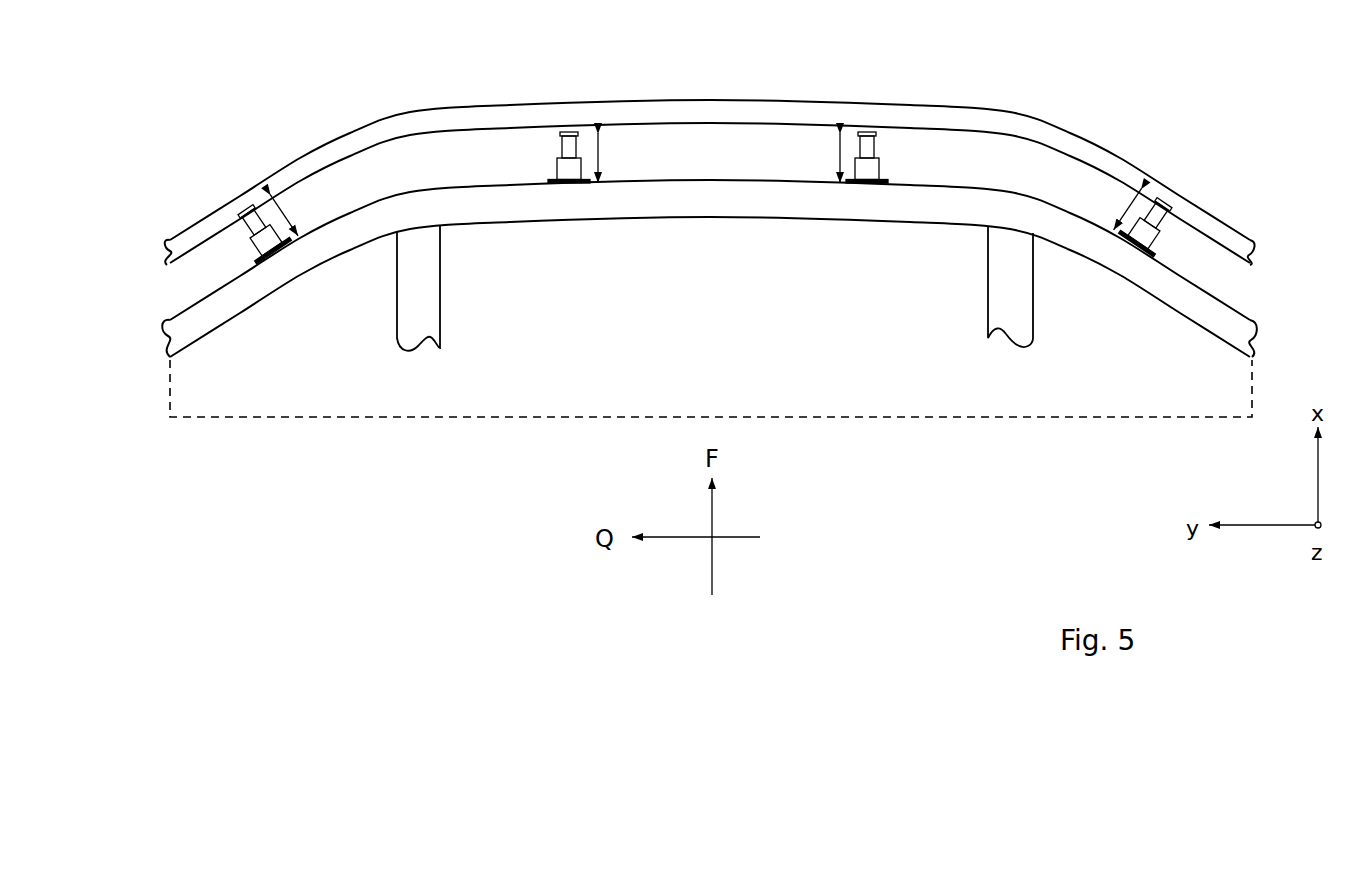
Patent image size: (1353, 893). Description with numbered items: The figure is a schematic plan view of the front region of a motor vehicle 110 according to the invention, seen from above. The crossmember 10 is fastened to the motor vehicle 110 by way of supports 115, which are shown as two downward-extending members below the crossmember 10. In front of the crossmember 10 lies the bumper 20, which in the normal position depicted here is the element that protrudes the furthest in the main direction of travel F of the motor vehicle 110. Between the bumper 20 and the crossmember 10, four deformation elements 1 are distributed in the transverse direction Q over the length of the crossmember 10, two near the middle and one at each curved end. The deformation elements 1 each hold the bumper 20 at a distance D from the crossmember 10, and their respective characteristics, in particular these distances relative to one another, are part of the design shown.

The deformation element 1 is at (557, 152).
The crossmember 10 is at (230, 300).
The bumper 20 is at (688, 117).
The motor vehicle 110 is at (734, 318).
The support 115 is at (413, 297).